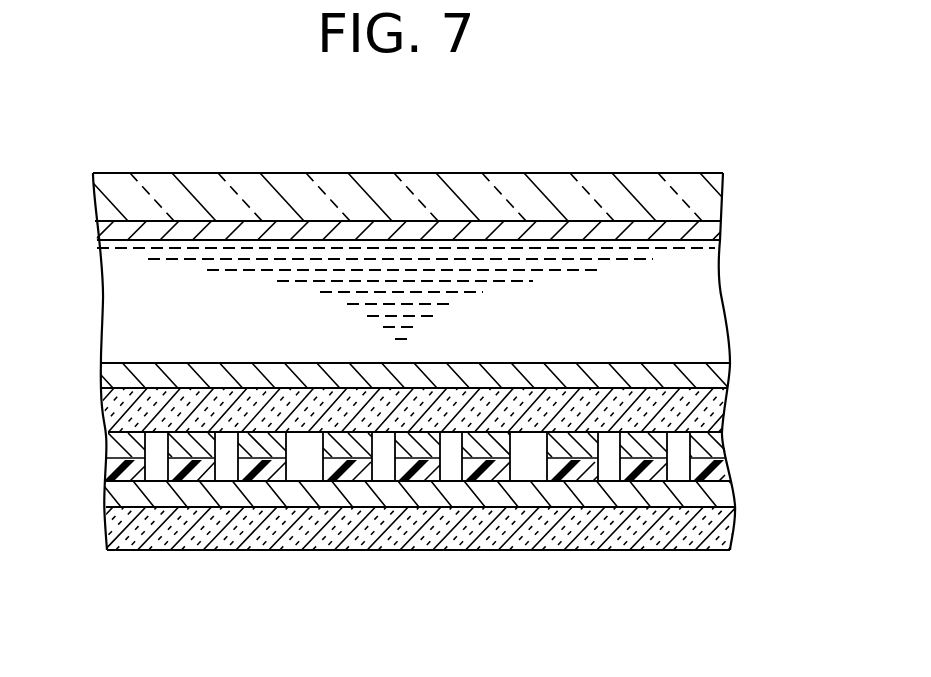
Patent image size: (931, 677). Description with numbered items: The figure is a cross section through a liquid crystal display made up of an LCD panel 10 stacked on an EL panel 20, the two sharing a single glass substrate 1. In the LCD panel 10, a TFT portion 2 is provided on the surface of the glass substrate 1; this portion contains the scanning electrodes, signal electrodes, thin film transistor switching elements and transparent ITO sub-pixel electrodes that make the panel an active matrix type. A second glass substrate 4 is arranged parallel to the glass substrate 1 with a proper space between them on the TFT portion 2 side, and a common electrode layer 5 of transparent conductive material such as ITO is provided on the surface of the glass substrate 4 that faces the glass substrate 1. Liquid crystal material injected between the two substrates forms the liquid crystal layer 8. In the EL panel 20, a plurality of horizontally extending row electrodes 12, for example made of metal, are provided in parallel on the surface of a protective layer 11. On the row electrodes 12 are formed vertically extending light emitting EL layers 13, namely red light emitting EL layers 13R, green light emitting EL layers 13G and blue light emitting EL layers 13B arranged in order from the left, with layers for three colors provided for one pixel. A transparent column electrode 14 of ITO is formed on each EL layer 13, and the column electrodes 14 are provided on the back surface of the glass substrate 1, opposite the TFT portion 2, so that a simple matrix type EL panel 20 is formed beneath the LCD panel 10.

The LCD panel 10 is at (82, 177).
The EL panel 20 is at (82, 415).
The glass substrate 4 is at (710, 197).
The common electrode layer 5 is at (708, 226).
The liquid crystal layer 8 is at (708, 290).
The TFT portion 2 is at (712, 375).
The glass substrate 1 is at (712, 408).
The column electrode 14 is at (715, 437).
The light emitting EL layer 13 is at (473, 527).
The red light emitting EL layer 13R is at (347, 473).
The green light emitting EL layer 13G is at (418, 473).
The blue light emitting EL layer 13B is at (487, 470).
The row electrode 12 is at (715, 493).
The protective layer 11 is at (715, 530).